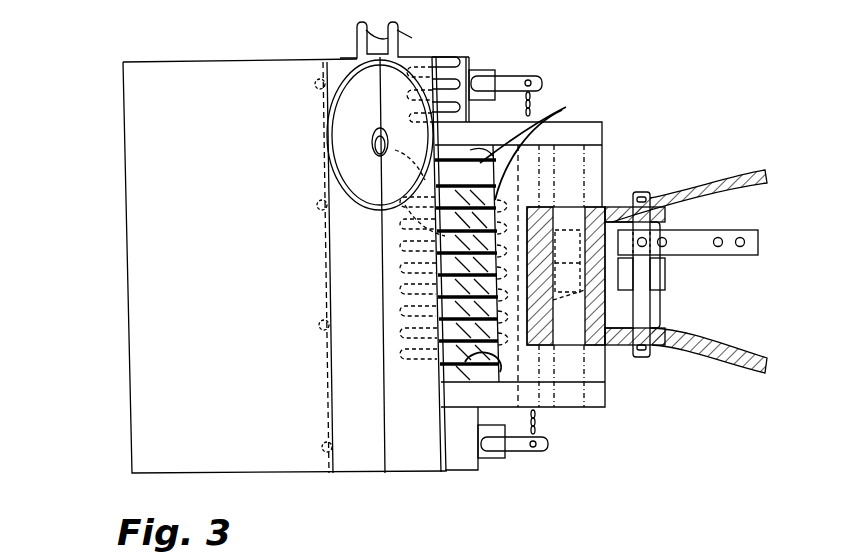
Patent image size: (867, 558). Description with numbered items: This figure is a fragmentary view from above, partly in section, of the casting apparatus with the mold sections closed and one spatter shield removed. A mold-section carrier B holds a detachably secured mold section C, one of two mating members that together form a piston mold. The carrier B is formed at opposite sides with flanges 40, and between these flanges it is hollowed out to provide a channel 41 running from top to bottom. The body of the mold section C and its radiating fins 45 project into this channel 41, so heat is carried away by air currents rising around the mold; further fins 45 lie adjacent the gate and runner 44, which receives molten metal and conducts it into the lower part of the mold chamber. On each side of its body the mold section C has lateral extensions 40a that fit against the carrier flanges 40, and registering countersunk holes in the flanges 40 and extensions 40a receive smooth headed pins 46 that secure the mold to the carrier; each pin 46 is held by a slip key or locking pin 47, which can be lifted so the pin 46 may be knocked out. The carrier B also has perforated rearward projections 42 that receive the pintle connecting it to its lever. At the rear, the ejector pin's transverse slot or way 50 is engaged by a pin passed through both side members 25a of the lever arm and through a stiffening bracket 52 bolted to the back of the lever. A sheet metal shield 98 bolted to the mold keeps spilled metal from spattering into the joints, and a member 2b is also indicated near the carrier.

The sheet metal shield 98 is at (128, 297).
The mold extension 40a is at (410, 485).
The gate and runner 44 is at (375, 140).
The flange 40 is at (466, 58).
The radiating fin 45 is at (447, 80).
The pin 46 is at (486, 70).
The locking pin 47 is at (527, 452).
The rearward projection 42 is at (603, 168).
The channel 41 is at (464, 277).
The member 2b is at (570, 410).
The slot or way 50 is at (651, 312).
The stiffening bracket 52 is at (705, 256).
The side member 25a is at (708, 177).
The carrier B is at (481, 143).
The mold section C is at (352, 344).